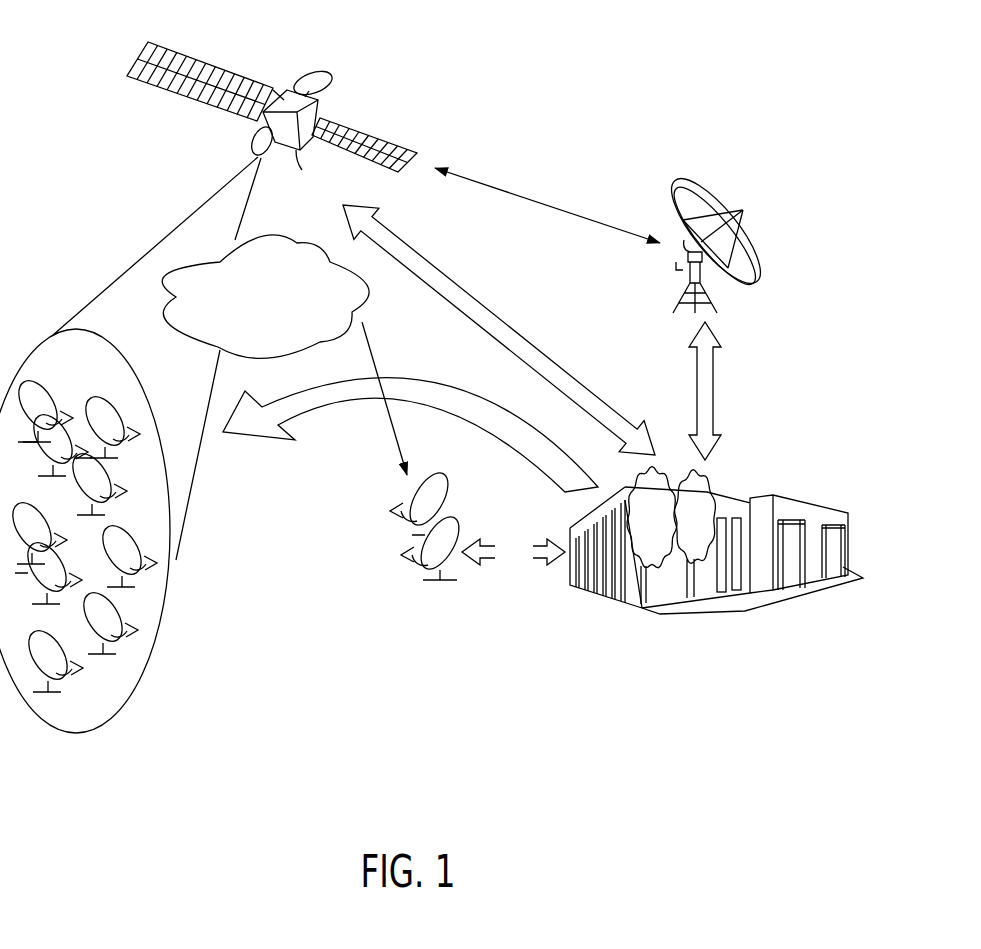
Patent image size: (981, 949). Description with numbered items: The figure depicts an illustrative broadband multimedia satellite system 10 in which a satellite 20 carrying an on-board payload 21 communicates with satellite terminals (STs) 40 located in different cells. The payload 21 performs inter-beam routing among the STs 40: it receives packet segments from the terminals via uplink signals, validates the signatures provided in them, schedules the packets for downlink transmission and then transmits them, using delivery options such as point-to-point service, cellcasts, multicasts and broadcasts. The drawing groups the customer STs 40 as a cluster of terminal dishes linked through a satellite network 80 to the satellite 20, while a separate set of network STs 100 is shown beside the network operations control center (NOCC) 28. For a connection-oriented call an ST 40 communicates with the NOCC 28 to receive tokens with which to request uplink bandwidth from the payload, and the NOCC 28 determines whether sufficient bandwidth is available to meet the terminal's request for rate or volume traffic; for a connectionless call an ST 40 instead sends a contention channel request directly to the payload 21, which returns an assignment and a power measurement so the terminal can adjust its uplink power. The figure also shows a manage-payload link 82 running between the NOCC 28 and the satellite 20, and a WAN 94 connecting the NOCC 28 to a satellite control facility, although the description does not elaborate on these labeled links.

The broadband multimedia satellite system 10 is at (70, 60).
The satellite 20 is at (342, 102).
The payload 21 is at (342, 263).
The satellite network 80 is at (272, 236).
The satellite terminals (STs) 40 is at (128, 528).
The manage payload link 82 is at (600, 402).
The wide area network (WAN) 94 is at (697, 360).
The network satellite terminals 100 is at (512, 443).
The network operations control center (NOCC) 28 is at (630, 605).